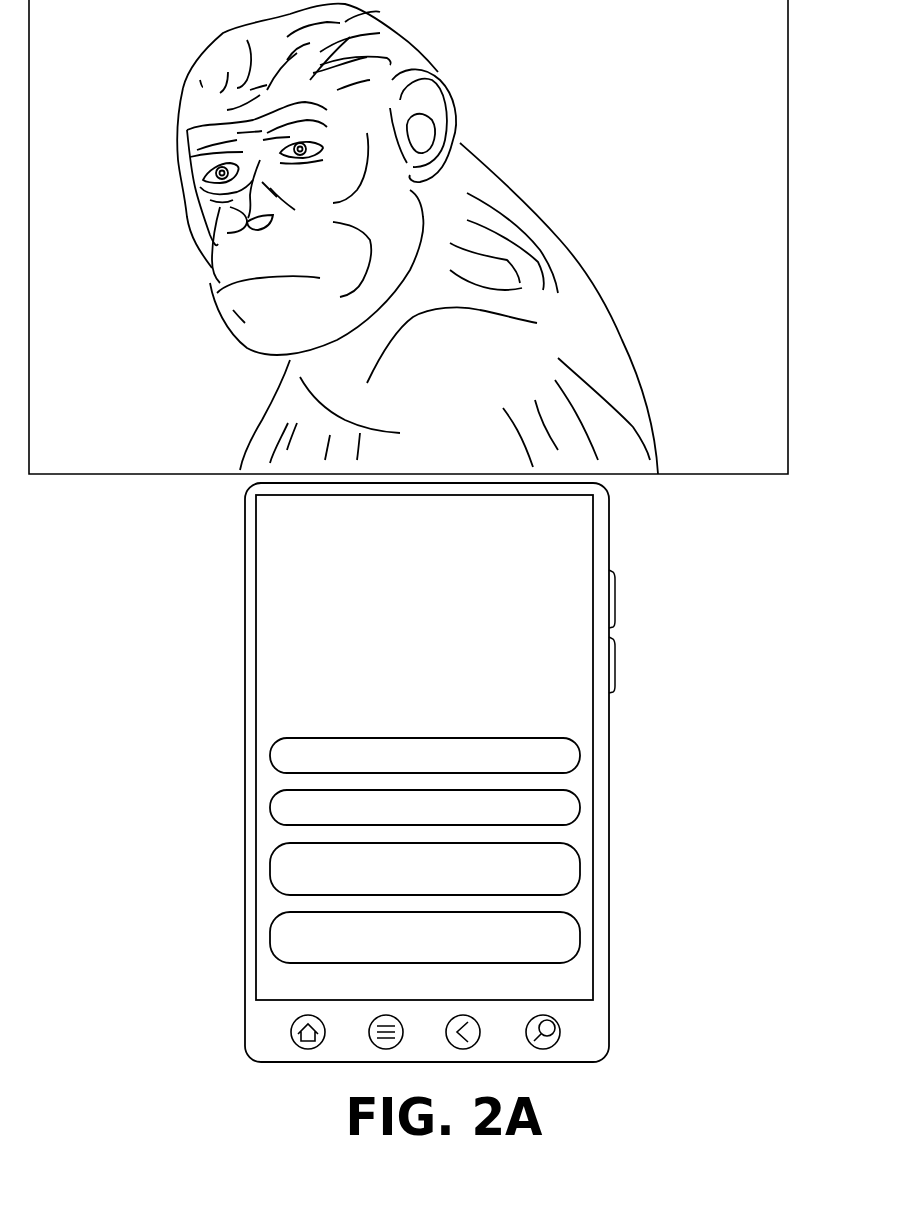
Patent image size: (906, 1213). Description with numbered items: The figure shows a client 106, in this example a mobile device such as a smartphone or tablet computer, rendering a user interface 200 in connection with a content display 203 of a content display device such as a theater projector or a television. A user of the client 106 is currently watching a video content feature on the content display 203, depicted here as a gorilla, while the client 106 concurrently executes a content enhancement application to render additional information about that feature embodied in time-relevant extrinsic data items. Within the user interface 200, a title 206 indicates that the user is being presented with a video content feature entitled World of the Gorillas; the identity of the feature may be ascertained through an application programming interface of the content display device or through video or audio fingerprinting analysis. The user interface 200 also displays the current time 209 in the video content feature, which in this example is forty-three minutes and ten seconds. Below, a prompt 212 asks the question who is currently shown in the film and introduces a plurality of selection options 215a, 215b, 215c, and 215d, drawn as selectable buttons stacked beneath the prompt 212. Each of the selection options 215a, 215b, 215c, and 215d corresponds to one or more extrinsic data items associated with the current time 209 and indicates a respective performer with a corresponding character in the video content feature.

The client 106 is at (272, 1048).
The user interface 200 is at (563, 533).
The content display 203 is at (167, 410).
The title 206 is at (275, 564).
The current time 209 is at (316, 616).
The prompt 212 is at (273, 687).
The selection option 215a is at (288, 755).
The selection option 215b is at (288, 807).
The selection option 215c is at (288, 877).
The selection option 215d is at (288, 945).